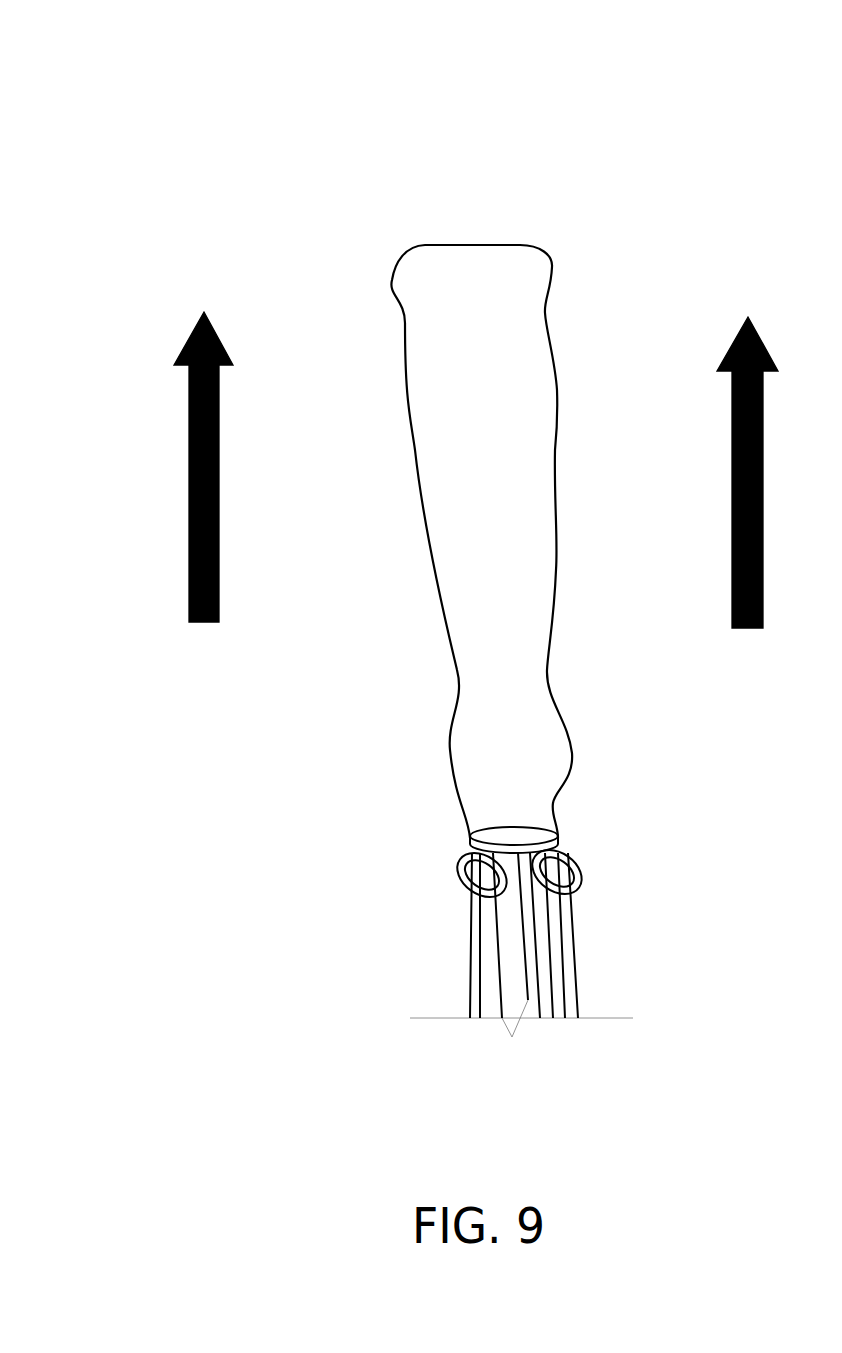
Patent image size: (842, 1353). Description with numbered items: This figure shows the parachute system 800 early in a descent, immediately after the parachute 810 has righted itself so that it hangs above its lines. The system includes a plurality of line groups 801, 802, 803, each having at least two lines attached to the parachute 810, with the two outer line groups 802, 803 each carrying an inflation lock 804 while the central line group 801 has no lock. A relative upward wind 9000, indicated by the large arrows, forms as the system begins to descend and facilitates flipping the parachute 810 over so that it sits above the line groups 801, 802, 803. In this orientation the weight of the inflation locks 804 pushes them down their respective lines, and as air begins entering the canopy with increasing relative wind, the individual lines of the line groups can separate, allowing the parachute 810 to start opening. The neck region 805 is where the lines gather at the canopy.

The parachute system 800 is at (152, 68).
The relative upward wind 9000 is at (183, 501).
The parachute 810 is at (441, 645).
The collar / balloon neck 805 is at (515, 820).
The inflation lock 804 is at (590, 869).
The line group 803 is at (480, 948).
The line group 802 is at (558, 918).
The line group 801 is at (540, 982).